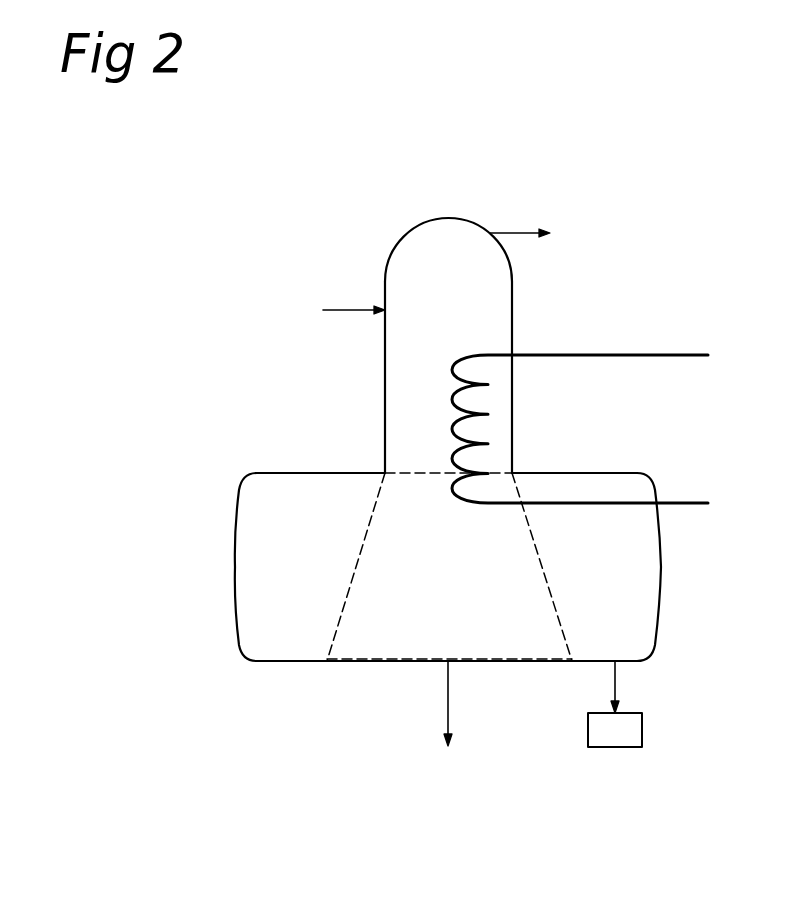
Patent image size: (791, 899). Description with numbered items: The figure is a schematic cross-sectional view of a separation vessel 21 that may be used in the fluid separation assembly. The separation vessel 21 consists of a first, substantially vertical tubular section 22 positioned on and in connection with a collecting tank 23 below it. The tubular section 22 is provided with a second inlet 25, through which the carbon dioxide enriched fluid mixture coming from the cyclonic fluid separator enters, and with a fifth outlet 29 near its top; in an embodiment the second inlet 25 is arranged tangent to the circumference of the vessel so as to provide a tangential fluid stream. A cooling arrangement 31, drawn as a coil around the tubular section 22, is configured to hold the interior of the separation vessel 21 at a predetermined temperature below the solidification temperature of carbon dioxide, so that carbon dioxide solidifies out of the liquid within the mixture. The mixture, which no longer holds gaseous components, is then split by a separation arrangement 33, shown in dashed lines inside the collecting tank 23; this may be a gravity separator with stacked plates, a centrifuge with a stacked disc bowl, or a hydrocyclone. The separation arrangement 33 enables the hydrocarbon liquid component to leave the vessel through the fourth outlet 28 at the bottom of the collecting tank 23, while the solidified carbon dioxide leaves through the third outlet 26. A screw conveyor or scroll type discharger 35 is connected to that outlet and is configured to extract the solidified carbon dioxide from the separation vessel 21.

The separation vessel 21 is at (405, 221).
The tubular section 22 is at (512, 300).
The collecting tank 23 is at (659, 619).
The second inlet 25 is at (340, 310).
The third outlet 26 is at (615, 683).
The fourth outlet 28 is at (448, 708).
The fifth outlet 29 is at (522, 233).
The cooling arrangement 31 is at (675, 355).
The separation arrangement 33 is at (537, 558).
The scroll type discharger 35 is at (640, 735).